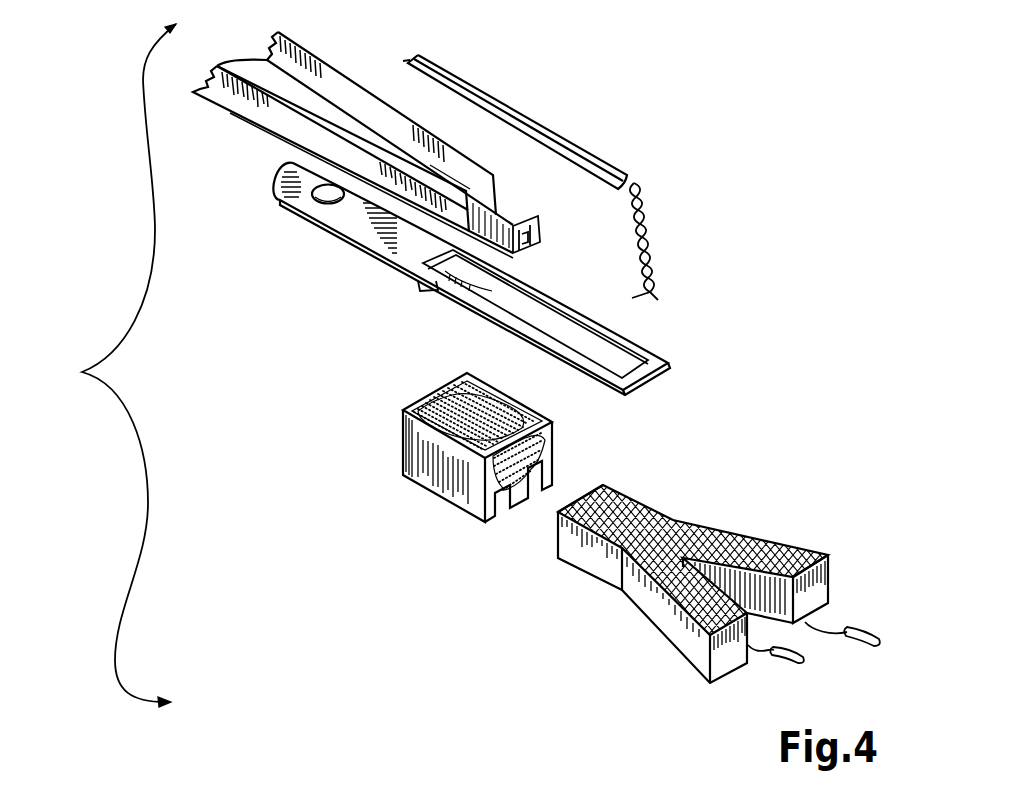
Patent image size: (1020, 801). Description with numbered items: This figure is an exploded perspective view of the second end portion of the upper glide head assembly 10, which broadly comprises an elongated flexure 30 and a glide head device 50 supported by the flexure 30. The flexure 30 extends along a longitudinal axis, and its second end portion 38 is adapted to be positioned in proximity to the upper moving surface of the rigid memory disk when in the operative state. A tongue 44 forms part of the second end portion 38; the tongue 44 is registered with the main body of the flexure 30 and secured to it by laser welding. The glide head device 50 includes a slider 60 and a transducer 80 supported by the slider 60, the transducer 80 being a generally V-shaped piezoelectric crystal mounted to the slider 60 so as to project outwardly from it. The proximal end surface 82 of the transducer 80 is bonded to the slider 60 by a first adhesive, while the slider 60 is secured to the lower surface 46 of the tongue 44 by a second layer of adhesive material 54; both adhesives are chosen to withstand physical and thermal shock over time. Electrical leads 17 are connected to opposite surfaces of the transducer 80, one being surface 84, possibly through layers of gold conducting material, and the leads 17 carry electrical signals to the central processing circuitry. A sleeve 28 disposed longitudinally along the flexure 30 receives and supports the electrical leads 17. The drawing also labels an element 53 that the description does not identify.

The upper glide head assembly 10 is at (278, 332).
The electrical leads 17 is at (630, 300).
The sleeve 28 is at (540, 128).
The flexure 30 is at (275, 117).
The second end portion 38 is at (460, 165).
The tongue 44 is at (370, 228).
The lower surface 46 is at (432, 296).
The glide head device 50 is at (770, 338).
The side contact pad 53 is at (527, 452).
The second layer of adhesive material 54 is at (503, 420).
The slider 60 is at (396, 522).
The transducer 80 is at (758, 507).
The proximal end surface 82 is at (586, 490).
The surface 84 is at (780, 540).